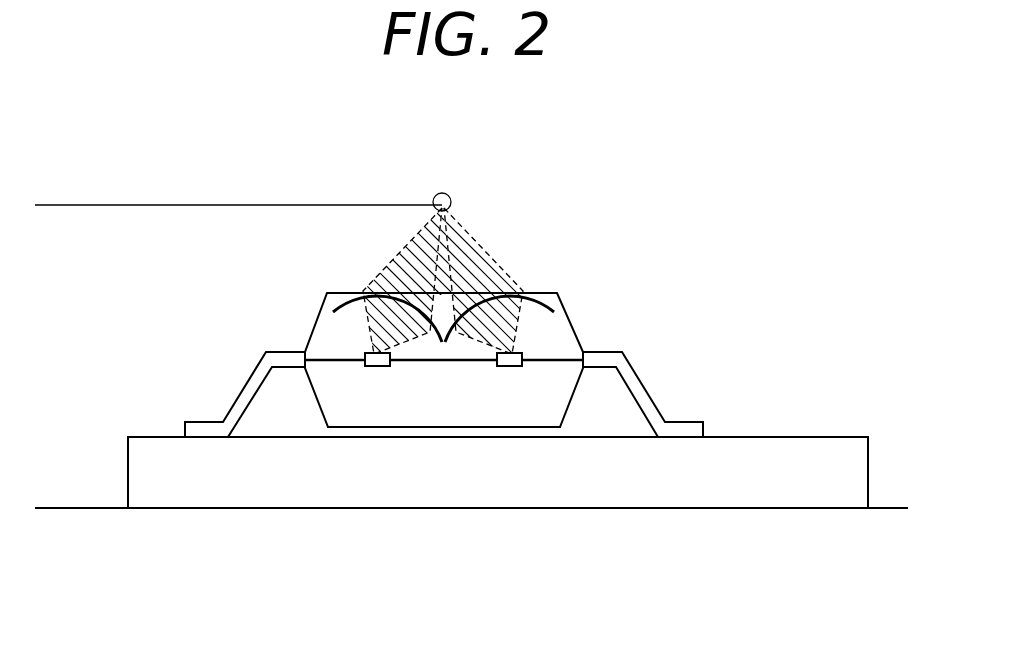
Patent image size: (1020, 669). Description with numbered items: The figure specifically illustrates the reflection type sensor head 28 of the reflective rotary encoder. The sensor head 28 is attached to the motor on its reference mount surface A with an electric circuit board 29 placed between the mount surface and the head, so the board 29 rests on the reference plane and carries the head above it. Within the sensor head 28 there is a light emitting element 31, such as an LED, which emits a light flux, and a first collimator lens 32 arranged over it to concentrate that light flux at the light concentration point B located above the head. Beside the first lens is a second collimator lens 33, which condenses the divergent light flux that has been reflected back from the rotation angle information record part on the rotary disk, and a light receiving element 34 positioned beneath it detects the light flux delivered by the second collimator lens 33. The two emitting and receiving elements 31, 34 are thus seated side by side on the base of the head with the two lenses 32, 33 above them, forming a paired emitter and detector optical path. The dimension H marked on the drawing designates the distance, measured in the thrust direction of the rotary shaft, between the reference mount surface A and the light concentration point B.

The reflection type sensor head 28 is at (300, 319).
The electric circuit board 29 is at (228, 483).
The light emitting element 31 is at (377, 367).
The first collimator lens 32 is at (347, 295).
The second collimator lens 33 is at (547, 293).
The light receiving element 34 is at (505, 367).
The reference mount surface A is at (887, 510).
The light concentration point B is at (442, 193).
The distance between reference mount surface and light concentration point H is at (81, 212).